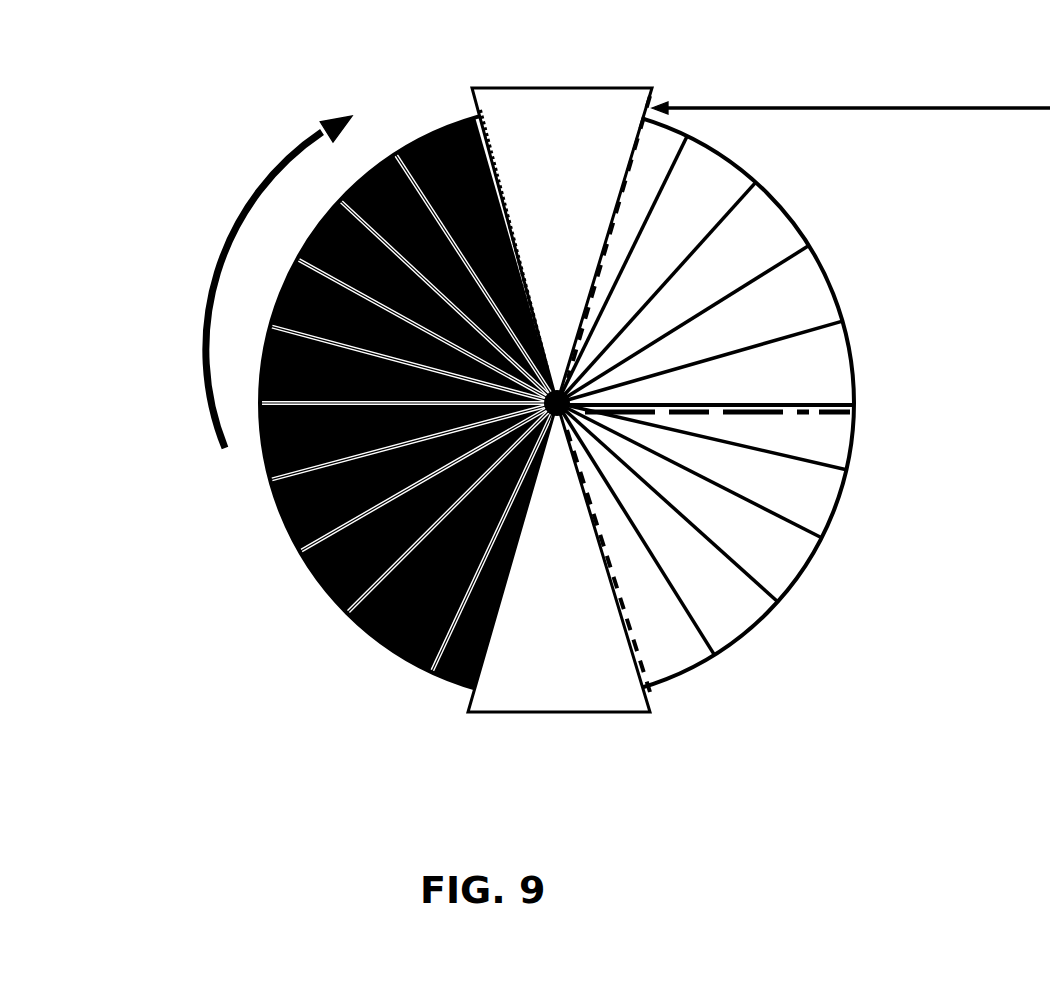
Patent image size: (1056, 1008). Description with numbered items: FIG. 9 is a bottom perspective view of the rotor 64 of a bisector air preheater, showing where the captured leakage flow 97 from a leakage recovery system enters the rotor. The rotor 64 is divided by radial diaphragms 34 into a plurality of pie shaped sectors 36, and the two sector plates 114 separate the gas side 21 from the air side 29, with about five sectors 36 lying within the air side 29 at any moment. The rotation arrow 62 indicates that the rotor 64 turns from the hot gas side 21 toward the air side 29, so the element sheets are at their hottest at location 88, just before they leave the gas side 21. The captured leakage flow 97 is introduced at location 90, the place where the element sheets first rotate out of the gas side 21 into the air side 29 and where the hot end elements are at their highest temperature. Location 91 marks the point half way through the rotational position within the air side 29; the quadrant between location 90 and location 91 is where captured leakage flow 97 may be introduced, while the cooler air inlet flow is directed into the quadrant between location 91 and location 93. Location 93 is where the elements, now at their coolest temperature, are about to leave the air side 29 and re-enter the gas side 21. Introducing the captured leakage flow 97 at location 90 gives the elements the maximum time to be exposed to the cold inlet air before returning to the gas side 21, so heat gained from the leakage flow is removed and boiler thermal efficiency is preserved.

The gas side 21 is at (344, 564).
The air side 29 is at (815, 292).
The diaphragms 34 is at (777, 524).
The pie shaped sectors 36 is at (705, 380).
The rotation arrow 62 is at (261, 282).
The rotor 64 is at (857, 501).
The location of hottest element sheets 88 is at (462, 105).
The captured leakage flow introduction location 90 is at (657, 86).
The half-way location 91 is at (875, 413).
The gas side entry location 93 is at (638, 622).
The captured leakage flow 97 is at (851, 83).
The sector plates 114 is at (560, 400).